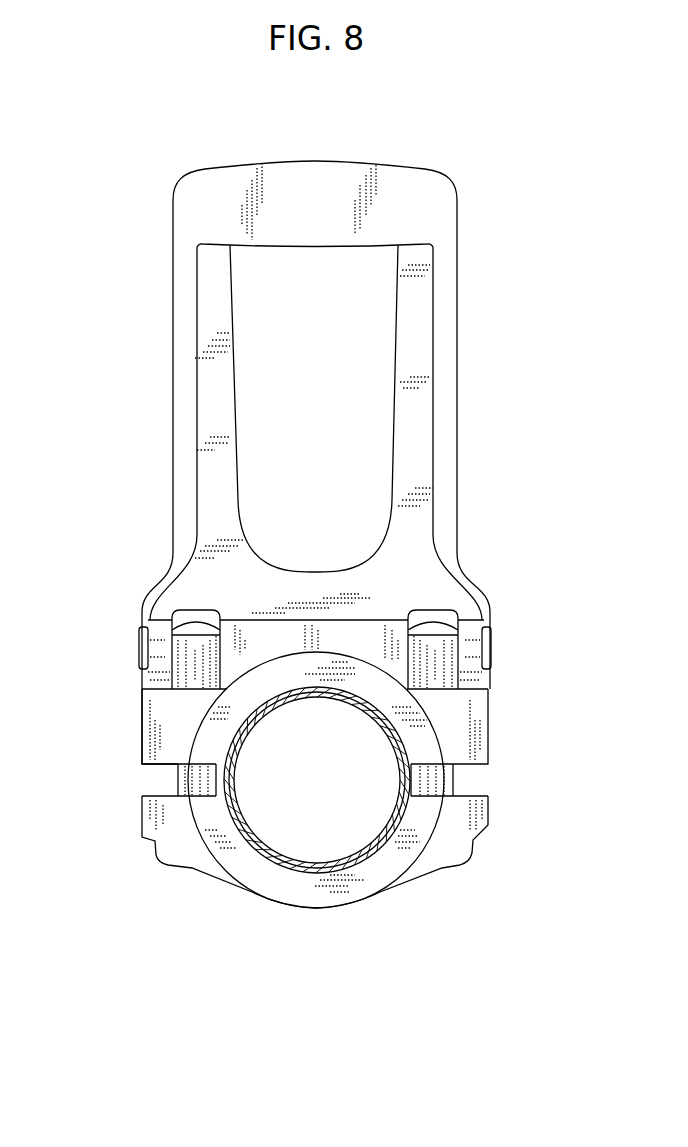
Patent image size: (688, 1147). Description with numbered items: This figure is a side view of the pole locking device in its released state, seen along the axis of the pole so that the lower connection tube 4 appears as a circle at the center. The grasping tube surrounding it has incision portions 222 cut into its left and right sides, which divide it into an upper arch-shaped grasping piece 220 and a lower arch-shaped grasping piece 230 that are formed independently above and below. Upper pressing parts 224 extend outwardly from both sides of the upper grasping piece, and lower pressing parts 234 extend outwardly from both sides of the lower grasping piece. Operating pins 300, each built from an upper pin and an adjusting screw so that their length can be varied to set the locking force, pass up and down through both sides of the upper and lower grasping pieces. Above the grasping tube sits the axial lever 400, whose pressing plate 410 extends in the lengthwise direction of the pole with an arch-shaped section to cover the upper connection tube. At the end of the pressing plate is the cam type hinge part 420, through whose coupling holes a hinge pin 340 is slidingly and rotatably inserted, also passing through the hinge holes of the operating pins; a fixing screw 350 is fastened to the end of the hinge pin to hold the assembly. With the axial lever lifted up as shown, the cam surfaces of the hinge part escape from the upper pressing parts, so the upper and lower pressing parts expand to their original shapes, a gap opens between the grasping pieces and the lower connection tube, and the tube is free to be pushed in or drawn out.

The axial lever 400 is at (173, 296).
The pressing plate 410 is at (175, 413).
The cam type hinge part 420 is at (148, 678).
The hinge pin 340 is at (139, 650).
The fixing screw 350 is at (492, 650).
The operating pin 300 is at (486, 676).
The upper arch-shaped grasping piece 220 is at (427, 740).
The incision portion 222 is at (475, 778).
The upper pressing part 224 is at (155, 748).
The lower arch-shaped grasping piece 230 is at (433, 810).
The lower pressing part 234 is at (150, 808).
The lower connection tube 4 is at (316, 863).